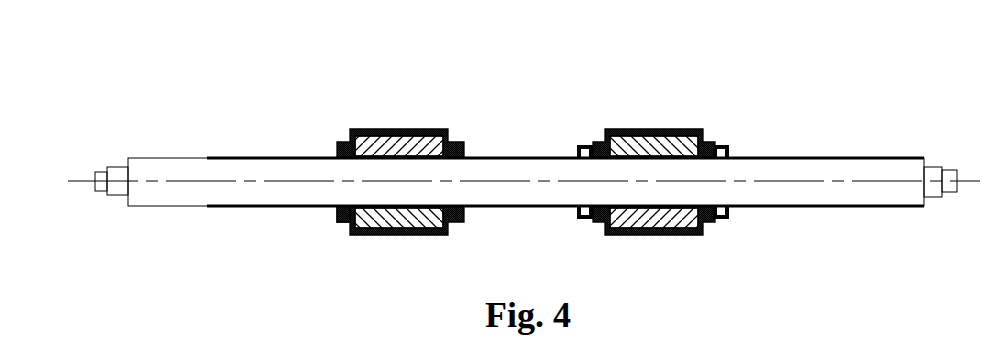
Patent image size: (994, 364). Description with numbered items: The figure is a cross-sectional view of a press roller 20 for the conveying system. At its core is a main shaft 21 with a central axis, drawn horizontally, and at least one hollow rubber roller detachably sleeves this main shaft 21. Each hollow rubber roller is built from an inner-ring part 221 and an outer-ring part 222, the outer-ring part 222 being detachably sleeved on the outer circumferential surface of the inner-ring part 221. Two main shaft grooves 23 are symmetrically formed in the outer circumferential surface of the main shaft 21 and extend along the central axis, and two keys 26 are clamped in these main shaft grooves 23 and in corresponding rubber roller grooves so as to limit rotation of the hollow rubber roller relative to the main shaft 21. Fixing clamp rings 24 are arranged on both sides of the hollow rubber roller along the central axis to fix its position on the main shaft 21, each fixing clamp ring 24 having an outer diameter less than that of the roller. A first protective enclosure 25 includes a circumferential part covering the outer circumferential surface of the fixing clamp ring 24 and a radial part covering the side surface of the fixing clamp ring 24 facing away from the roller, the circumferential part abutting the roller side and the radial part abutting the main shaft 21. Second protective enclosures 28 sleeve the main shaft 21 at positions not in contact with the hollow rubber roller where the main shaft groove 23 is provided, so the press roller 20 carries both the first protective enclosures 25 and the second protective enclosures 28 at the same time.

The press roller 20 is at (828, 58).
The main shaft 21 is at (160, 166).
The main shaft groove 23 is at (242, 157).
The outer-ring part 222 is at (410, 130).
The inner-ring part 221 is at (377, 233).
The key 26 is at (340, 222).
The first protective enclosure 25 is at (708, 141).
The fixing clamp ring 24 is at (592, 218).
The second protective enclosure 28 is at (578, 144).